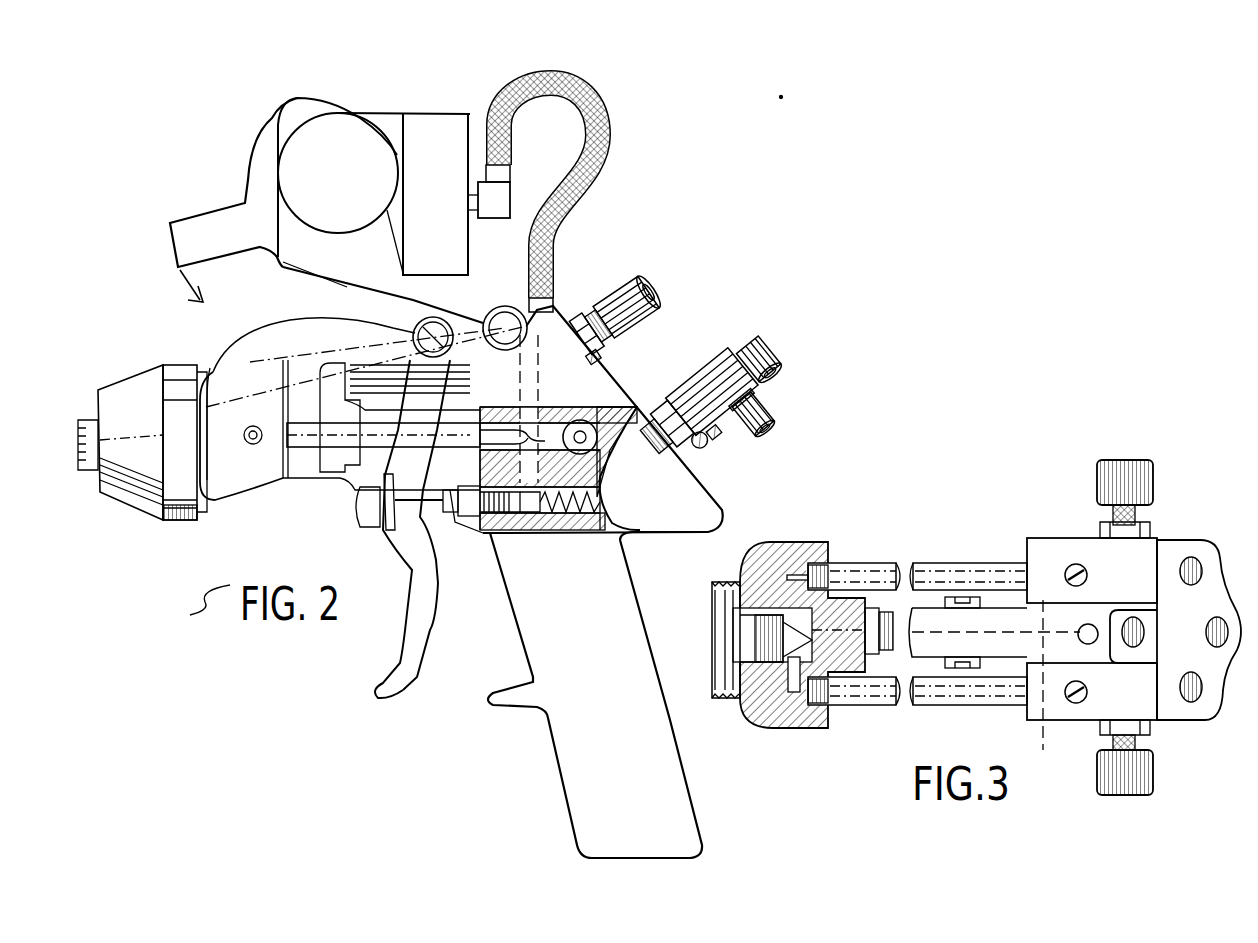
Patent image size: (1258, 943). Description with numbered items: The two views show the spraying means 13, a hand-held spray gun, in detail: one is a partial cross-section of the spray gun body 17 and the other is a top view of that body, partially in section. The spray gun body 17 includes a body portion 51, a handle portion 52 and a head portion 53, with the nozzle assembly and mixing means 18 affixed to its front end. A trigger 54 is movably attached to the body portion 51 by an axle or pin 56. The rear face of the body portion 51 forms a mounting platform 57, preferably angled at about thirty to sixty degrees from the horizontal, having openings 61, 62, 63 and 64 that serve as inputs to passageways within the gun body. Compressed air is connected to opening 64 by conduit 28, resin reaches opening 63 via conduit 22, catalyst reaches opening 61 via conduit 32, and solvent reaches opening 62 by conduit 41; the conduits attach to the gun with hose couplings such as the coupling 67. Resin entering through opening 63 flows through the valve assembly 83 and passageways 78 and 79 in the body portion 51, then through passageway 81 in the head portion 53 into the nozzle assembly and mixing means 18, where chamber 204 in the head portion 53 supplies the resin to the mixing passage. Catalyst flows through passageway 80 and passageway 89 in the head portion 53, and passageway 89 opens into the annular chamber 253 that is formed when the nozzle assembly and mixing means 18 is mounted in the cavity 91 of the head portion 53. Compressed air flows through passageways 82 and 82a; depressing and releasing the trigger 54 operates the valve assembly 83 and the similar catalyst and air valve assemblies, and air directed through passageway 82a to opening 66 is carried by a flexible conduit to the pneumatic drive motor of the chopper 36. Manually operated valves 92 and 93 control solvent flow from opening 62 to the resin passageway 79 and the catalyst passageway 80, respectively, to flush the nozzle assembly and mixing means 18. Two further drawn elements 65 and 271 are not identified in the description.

In FIG. 2, the spraying means 13 is at (227, 578).
In FIG. 2, the spray gun body 17 is at (203, 333).
In FIG. 2, the nozzle assembly and mixing means 18 is at (117, 365).
In FIG. 2, the conduit 22 is at (705, 375).
In FIG. 2, the conduit 28 is at (755, 440).
In FIG. 2, the conduit 32 is at (750, 350).
In FIG. 2, the chopper 36 is at (255, 173).
In FIG. 2, the conduit 41 is at (628, 276).
In FIG. 2, the body portion 51 is at (330, 325).
In FIG. 2, the handle portion 52 is at (572, 762).
In FIG. 2, the head portion 53 is at (241, 355).
In FIG. 3, the head portion 53 is at (800, 560).
In FIG. 2, the trigger 54 is at (428, 592).
In FIG. 2, the axle or pin 56 is at (420, 320).
In FIG. 2, the mounting platform 57 is at (567, 318).
In FIG. 3, the mounting platform 57 is at (1182, 545).
In FIG. 3, the opening 61 is at (1197, 558).
In FIG. 3, the opening 62 is at (1133, 617).
In FIG. 2, the opening 63 is at (680, 455).
In FIG. 3, the opening 63 is at (1195, 702).
In FIG. 3, the opening 64 is at (1219, 647).
In FIG. 2, the hose 65 is at (553, 240).
In FIG. 3, the opening 66 is at (1085, 624).
In FIG. 2, the hose coupling 67 is at (608, 345).
In FIG. 2, the passageway 78 is at (528, 462).
In FIG. 2, the passageway 79 is at (495, 432).
In FIG. 3, the passageway 79 is at (908, 710).
In FIG. 3, the passageway 80 is at (910, 565).
In FIG. 3, the passageway 81 is at (797, 700).
In FIG. 2, the passageway 82 is at (318, 368).
In FIG. 3, the passageway 82 is at (994, 690).
In FIG. 2, the passageway 82a is at (540, 382).
In FIG. 2, the valve assembly 83 is at (528, 512).
In FIG. 3, the passageway 89 is at (778, 565).
In FIG. 3, the cavity 91 is at (760, 650).
In FIG. 3, the valve 92 is at (1122, 795).
In FIG. 3, the valve 93 is at (1130, 462).
In FIG. 3, the chamber 204 is at (812, 652).
In FIG. 3, the annular chamber 253 is at (745, 625).
In FIG. 2, the retaining ring 271 is at (178, 518).